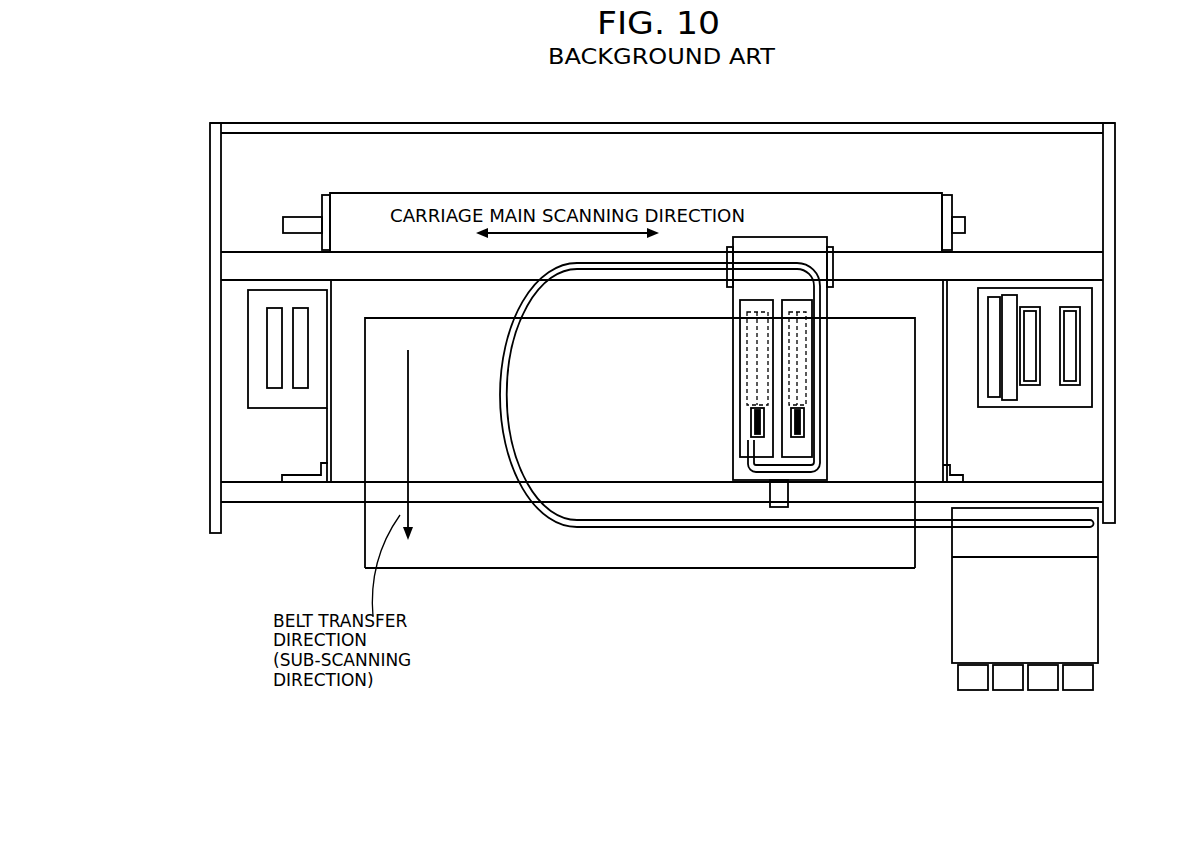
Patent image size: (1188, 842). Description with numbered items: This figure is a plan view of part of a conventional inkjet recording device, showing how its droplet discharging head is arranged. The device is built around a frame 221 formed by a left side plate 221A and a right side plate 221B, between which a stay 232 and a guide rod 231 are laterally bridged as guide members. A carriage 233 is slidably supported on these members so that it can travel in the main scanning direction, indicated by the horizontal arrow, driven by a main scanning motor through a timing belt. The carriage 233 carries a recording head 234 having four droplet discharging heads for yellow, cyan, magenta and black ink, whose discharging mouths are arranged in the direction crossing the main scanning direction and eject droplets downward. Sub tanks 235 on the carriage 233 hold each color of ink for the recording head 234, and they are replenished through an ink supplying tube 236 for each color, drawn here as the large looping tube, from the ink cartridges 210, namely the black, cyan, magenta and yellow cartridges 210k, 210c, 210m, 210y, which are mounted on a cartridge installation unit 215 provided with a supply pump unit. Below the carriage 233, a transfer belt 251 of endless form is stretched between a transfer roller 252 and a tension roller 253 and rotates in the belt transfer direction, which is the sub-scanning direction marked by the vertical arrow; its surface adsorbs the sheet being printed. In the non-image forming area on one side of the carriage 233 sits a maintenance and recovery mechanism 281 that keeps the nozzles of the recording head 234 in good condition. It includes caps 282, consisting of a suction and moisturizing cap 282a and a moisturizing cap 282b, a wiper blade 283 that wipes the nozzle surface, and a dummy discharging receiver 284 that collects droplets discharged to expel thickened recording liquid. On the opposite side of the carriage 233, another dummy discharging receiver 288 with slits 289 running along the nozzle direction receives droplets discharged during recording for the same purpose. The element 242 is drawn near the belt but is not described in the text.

The frame 221 is at (1122, 140).
The side plate 221A is at (210, 182).
The side plate 221B is at (1115, 172).
The guide rod 231 is at (262, 254).
The transfer belt 251 is at (875, 197).
The transfer roller 252 is at (950, 196).
The carriage 233 is at (782, 245).
The recording head 234 is at (805, 302).
The sub tank 235 is at (792, 362).
The ink supplying tube 236 is at (522, 345).
The stay 232 is at (488, 500).
The platen 242 is at (568, 568).
The tension roller 253 is at (322, 502).
The dummy discharging receiver 288 is at (305, 398).
The slits 289 is at (270, 390).
The maintenance and recovery mechanism 281 is at (1095, 345).
The cap 282 is at (1083, 388).
The cap 282a is at (1032, 387).
The cap 282b is at (1070, 387).
The wiper blade 283 is at (993, 297).
The dummy discharging receiver 284 is at (1009, 295).
The cartridge installation unit 215 is at (1100, 605).
The ink cartridge 210 is at (1044, 709).
The ink cartridge 210k is at (975, 692).
The ink cartridge 210c is at (1012, 692).
The ink cartridge 210m is at (1040, 692).
The ink cartridge 210y is at (1080, 692).